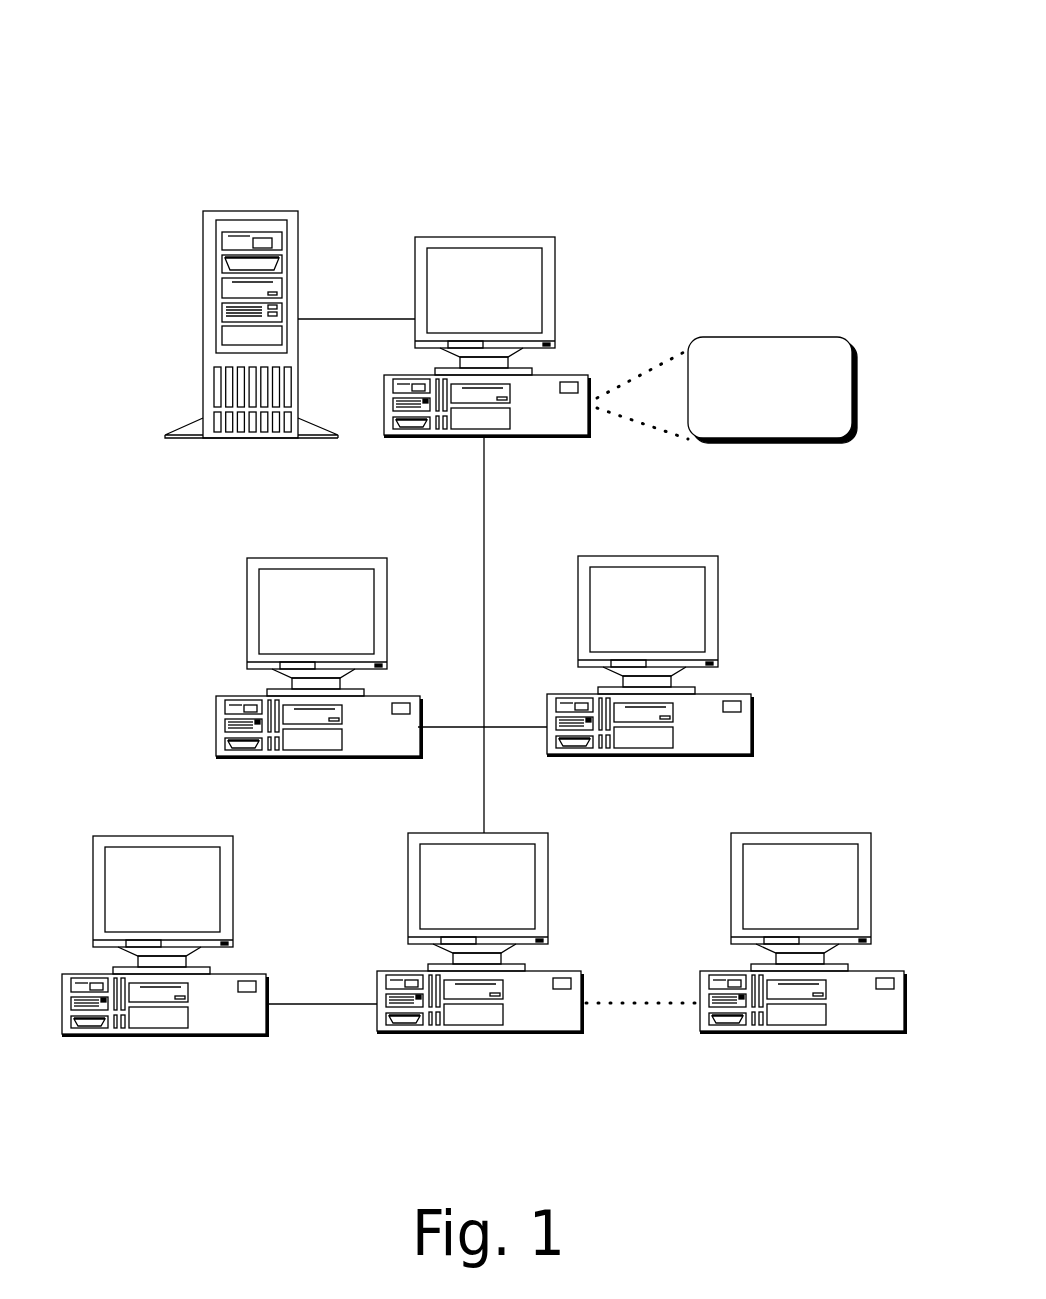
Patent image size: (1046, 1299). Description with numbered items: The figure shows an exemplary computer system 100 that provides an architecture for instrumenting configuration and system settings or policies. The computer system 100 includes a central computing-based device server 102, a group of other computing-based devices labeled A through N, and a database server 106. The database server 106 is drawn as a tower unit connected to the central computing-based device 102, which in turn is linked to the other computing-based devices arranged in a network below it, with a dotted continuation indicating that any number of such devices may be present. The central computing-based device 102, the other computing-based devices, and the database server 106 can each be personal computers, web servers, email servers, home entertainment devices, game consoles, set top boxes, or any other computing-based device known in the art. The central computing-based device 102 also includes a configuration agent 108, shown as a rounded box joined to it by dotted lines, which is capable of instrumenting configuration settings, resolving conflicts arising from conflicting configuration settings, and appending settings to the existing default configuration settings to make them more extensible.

The computer system 100 is at (575, 62).
The central computing-based device server 102 is at (486, 236).
The database server 106 is at (249, 211).
The configuration agent 108 is at (755, 419).